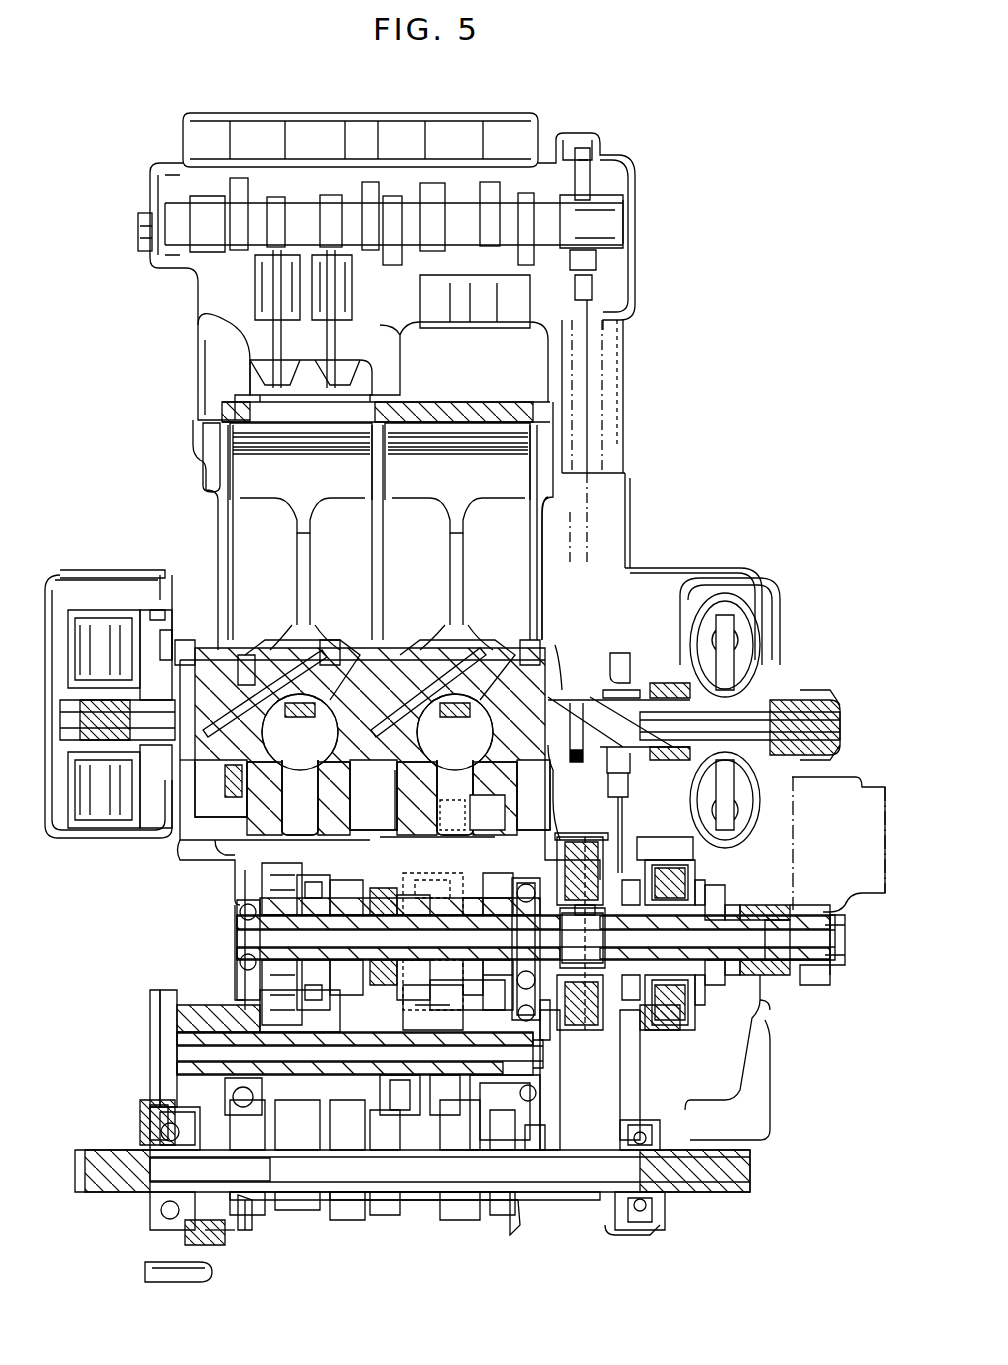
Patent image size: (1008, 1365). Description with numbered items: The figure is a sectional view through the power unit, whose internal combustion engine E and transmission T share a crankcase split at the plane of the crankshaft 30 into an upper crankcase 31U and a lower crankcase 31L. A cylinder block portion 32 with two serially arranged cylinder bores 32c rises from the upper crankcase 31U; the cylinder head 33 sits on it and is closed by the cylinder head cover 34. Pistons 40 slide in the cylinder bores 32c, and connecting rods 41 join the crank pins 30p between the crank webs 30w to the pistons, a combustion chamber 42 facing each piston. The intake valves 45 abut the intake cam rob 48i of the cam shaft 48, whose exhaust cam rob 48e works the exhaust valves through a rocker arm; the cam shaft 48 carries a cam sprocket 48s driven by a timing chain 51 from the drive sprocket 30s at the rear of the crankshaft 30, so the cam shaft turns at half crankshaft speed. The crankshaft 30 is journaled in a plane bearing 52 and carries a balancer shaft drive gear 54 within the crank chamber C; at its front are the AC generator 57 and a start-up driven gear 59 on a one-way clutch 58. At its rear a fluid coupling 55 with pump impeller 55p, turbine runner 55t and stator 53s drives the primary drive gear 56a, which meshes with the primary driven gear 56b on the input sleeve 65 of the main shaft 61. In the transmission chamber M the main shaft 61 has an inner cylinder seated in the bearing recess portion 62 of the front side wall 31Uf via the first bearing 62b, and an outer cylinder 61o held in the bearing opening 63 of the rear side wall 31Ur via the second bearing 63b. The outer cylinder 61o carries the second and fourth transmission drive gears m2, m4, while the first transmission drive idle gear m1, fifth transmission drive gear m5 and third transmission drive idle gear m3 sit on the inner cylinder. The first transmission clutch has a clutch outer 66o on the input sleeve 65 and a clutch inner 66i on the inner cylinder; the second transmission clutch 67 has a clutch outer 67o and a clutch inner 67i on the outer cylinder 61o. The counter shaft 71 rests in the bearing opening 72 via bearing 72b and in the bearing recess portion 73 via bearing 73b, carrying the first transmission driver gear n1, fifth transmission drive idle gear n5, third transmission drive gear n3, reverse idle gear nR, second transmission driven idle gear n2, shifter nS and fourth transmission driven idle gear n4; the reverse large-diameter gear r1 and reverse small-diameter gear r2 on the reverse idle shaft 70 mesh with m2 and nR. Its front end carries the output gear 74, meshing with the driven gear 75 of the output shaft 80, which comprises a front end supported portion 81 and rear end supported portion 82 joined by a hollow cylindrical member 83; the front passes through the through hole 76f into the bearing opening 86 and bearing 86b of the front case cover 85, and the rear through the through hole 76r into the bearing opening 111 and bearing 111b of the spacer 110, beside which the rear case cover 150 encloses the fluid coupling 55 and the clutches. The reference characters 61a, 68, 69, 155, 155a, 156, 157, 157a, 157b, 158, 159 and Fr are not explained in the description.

The crankshaft 30 is at (442, 741).
The crank pin 30p is at (358, 648).
The crank web 30w is at (377, 732).
The drive sprocket 30s is at (577, 690).
The upper crankcase 31U is at (225, 866).
The front side wall 31Uf is at (238, 958).
The rear side wall 31Ur is at (546, 1060).
The lower crankcase 31L is at (272, 1210).
The cylinder block portion 32 is at (218, 535).
The cylinder bore 32c is at (380, 575).
The cylinder head 33 is at (198, 345).
The cylinder head cover 34 is at (165, 162).
The piston 40 is at (262, 500).
The connecting rod 41 is at (312, 580).
The combustion chamber 42 is at (205, 460).
The intake valve 45 is at (262, 375).
The cam shaft 48 is at (615, 215).
The exhaust cam rob 48e is at (235, 178).
The intake cam rob 48i is at (332, 195).
The cam sprocket 48s is at (627, 307).
The timing chain 51 is at (587, 515).
The plane bearing 52 is at (552, 607).
The stator 53s is at (730, 660).
The balancer shaft drive gear 54 is at (250, 655).
The fluid coupling 55 is at (738, 577).
The turbine runner 55t is at (692, 630).
The pump impeller 55p is at (752, 600).
The primary drive gear 56a is at (615, 653).
The primary driven gear 56b is at (622, 1080).
The AC generator 57 is at (96, 575).
The one-way clutch 58 is at (158, 640).
The start-up driven gear 59 is at (162, 608).
The main shaft 61 is at (240, 930).
The outer cylinder 61o is at (467, 995).
The main shaft end 61a is at (587, 890).
The bearing recess portion 62 is at (257, 926).
The first bearing 62b is at (242, 905).
The bearing opening 63 is at (550, 1008).
The second bearing 63b is at (552, 1040).
The input sleeve 65 is at (636, 878).
The clutch inner 66i is at (680, 895).
The clutch outer 66o is at (655, 837).
The second transmission clutch 67 is at (592, 1050).
The clutch inner 67i is at (572, 860).
The clutch outer 67o is at (581, 816).
The pressure plate 68 is at (700, 1005).
The clutch spring 69 is at (712, 985).
The reverse idle shaft 70 is at (472, 814).
The counter shaft 71 is at (170, 1052).
The bearing opening 72 is at (233, 997).
The bearing 72b is at (165, 1015).
The bearing recess portion 73 is at (524, 1112).
The bearing 73b is at (536, 1137).
The output gear 74 is at (152, 995).
The driven gear 75 is at (245, 1232).
The through hole 76f is at (266, 1203).
The through hole 76r is at (533, 1202).
The output shaft 80 is at (420, 1218).
The front end supported portion 81 is at (100, 1192).
The rear end supported portion 82 is at (695, 1195).
The hollow cylindrical member 83 is at (430, 1200).
The front case cover 85 is at (150, 1085).
The bearing opening 86 is at (205, 1245).
The bearing 86b is at (150, 1222).
The spacer 110 is at (668, 566).
The bearing opening 111 is at (614, 1213).
The bearing 111b is at (645, 1230).
The rear case cover 150 is at (755, 1025).
The balancer shaft 155 is at (810, 705).
The balancer shaft end 155a is at (832, 742).
The bearing 156 is at (732, 975).
The nut 157 is at (805, 975).
The washer 157a is at (782, 985).
The lock 157b is at (812, 978).
The gear 158 is at (752, 903).
The bolt 159 is at (838, 943).
The first transmission drive idle gear m1 is at (282, 944).
The second transmission drive gear m2 is at (433, 951).
The third transmission drive idle gear m3 is at (400, 930).
The fourth transmission drive gear m4 is at (488, 940).
The fifth transmission drive gear m5 is at (330, 932).
The transmission chamber M is at (400, 884).
The first transmission driver gear n1 is at (298, 1195).
The second transmission driven idle gear n2 is at (460, 1164).
The third transmission drive gear n3 is at (347, 1164).
The fourth transmission driven idle gear n4 is at (500, 1205).
The fifth transmission drive idle gear n5 is at (312, 1215).
The reverse idle gear nR is at (385, 1169).
The shifter nS is at (426, 1104).
The reverse large-diameter gear r1 is at (487, 796).
The reverse small-diameter gear r2 is at (406, 789).
The crank chamber C is at (365, 750).
The internal combustion engine E is at (146, 496).
The transmission T is at (141, 1028).
The front direction Fr is at (100, 893).